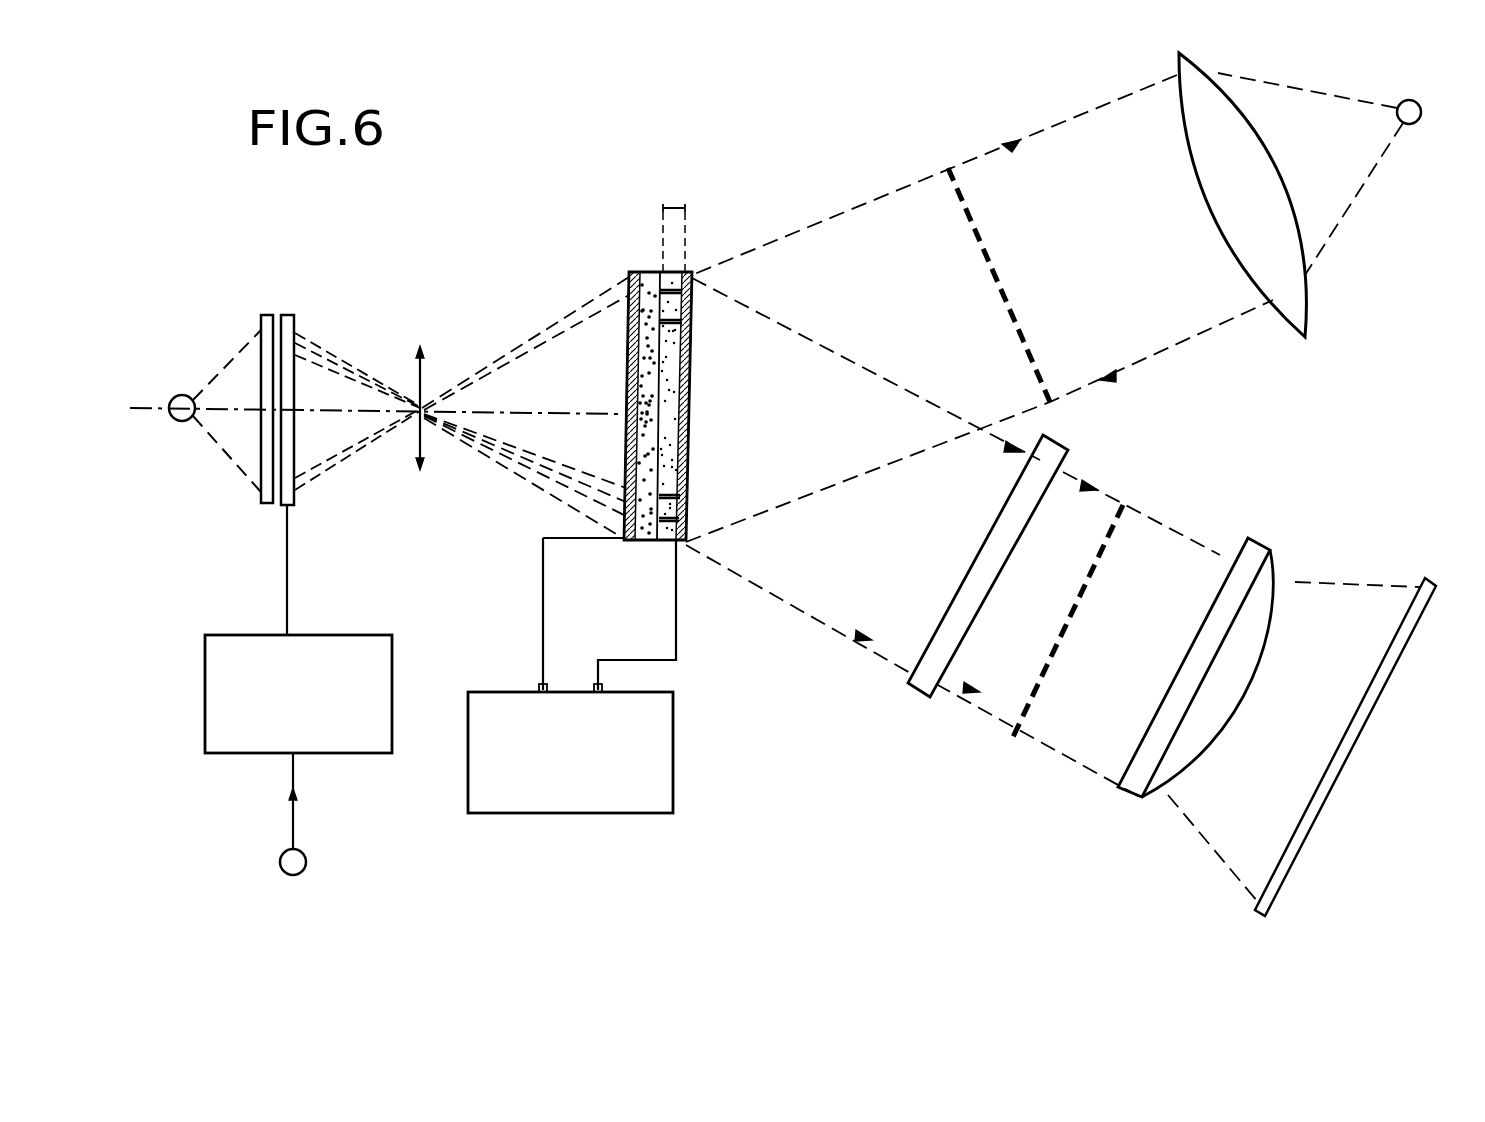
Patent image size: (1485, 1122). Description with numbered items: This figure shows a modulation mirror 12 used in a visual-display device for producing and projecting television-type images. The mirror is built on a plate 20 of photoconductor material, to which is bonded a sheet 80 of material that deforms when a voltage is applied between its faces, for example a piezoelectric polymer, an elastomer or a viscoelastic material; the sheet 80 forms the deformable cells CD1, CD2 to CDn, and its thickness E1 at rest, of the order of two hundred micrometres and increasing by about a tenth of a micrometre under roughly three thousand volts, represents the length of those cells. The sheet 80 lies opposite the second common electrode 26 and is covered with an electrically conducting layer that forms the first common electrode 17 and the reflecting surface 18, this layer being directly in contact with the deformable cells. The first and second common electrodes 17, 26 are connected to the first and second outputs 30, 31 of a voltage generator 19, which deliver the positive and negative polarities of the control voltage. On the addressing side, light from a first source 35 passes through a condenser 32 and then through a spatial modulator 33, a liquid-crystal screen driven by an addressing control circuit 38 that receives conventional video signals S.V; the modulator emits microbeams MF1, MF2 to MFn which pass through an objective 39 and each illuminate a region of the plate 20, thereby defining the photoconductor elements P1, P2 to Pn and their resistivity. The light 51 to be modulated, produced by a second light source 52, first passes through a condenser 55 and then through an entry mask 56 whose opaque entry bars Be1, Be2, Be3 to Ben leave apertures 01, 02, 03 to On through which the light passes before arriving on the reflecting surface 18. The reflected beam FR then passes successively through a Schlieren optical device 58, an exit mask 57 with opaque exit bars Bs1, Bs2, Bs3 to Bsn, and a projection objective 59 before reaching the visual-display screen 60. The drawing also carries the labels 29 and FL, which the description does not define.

The modulation mirror 12 is at (652, 157).
The thickness E1 is at (672, 206).
The plate of photoconductor material 20 is at (644, 546).
The photoconductor element Pn is at (644, 272).
The sheet of deformable material 80 is at (666, 428).
The first common electrode 17 is at (694, 272).
The deformable cell CDn is at (694, 280).
The reflecting surface 18 is at (822, 275).
The second common electrode 26 is at (632, 400).
The photoconductor element P2 is at (628, 490).
The deformable cell CD2 is at (684, 512).
The photoconductor element P1 is at (638, 542).
The deformable cell CD1 is at (675, 545).
The optical axis / light source 29 is at (508, 412).
The first light source 35 is at (178, 423).
The condenser 32 is at (267, 312).
The spatial modulator 33 is at (290, 312).
The light flux FL is at (227, 370).
The microbeam MF1 is at (311, 344).
The microbeam MF2 is at (325, 369).
The microbeam MFn is at (316, 470).
The objective 39 is at (416, 470).
The addressing control circuit 38 is at (222, 634).
The video signals S.V is at (296, 828).
The second output 31 is at (548, 686).
The first output 30 is at (604, 688).
The voltage generator 19 is at (674, 733).
The entry mask 56 is at (948, 168).
The opaque entry bar Be1 is at (950, 168).
The aperture 01 is at (945, 168).
The opaque entry bar Be2 is at (964, 190).
The aperture 02 is at (962, 188).
The opaque entry bar Be3 is at (968, 208).
The aperture 03 is at (970, 214).
The opaque entry bar Ben is at (1052, 398).
The aperture On is at (1044, 398).
The light 51 is at (1275, 118).
The second light source 52 is at (1421, 118).
The condenser 55 is at (1290, 322).
The opaque exit bar Bs1 is at (1114, 515).
The opaque exit bar Bs2 is at (1112, 536).
The opaque exit bar Bs3 is at (1098, 566).
The opaque exit bar Bsn is at (1028, 740).
The reflected beam FR is at (845, 608).
The Schlieren optical device 58 is at (905, 700).
The exit mask 57 is at (1010, 740).
The projection objective 59 is at (1122, 790).
The visual-display screen 60 is at (1316, 814).